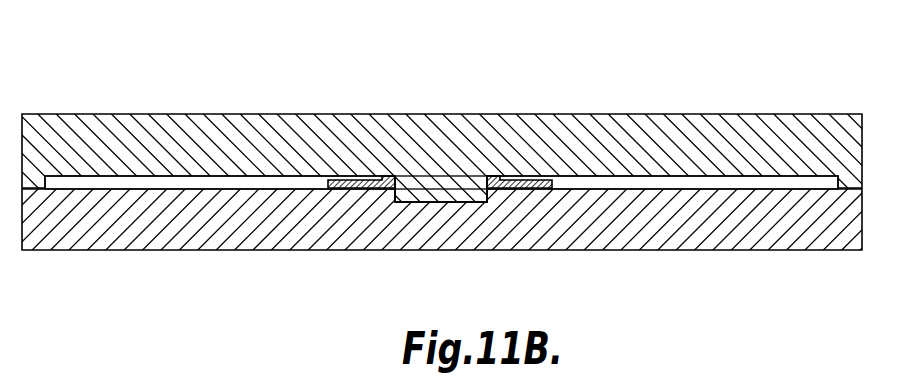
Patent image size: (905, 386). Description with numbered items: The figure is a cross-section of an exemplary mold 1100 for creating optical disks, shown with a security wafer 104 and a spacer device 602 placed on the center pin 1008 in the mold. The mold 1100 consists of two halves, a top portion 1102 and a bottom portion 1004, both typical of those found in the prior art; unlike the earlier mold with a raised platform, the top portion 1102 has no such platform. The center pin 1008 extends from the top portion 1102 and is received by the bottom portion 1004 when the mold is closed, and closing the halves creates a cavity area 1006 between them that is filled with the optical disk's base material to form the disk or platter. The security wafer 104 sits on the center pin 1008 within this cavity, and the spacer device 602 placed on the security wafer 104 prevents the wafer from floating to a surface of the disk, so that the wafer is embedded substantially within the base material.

The mold 1100 is at (120, 79).
The top portion 1102 is at (697, 114).
The bottom portion 1004 is at (693, 251).
The cavity area 1006 is at (209, 183).
The center pin 1008 is at (445, 202).
The spacer device 602 is at (383, 177).
The security wafer 104 is at (517, 177).